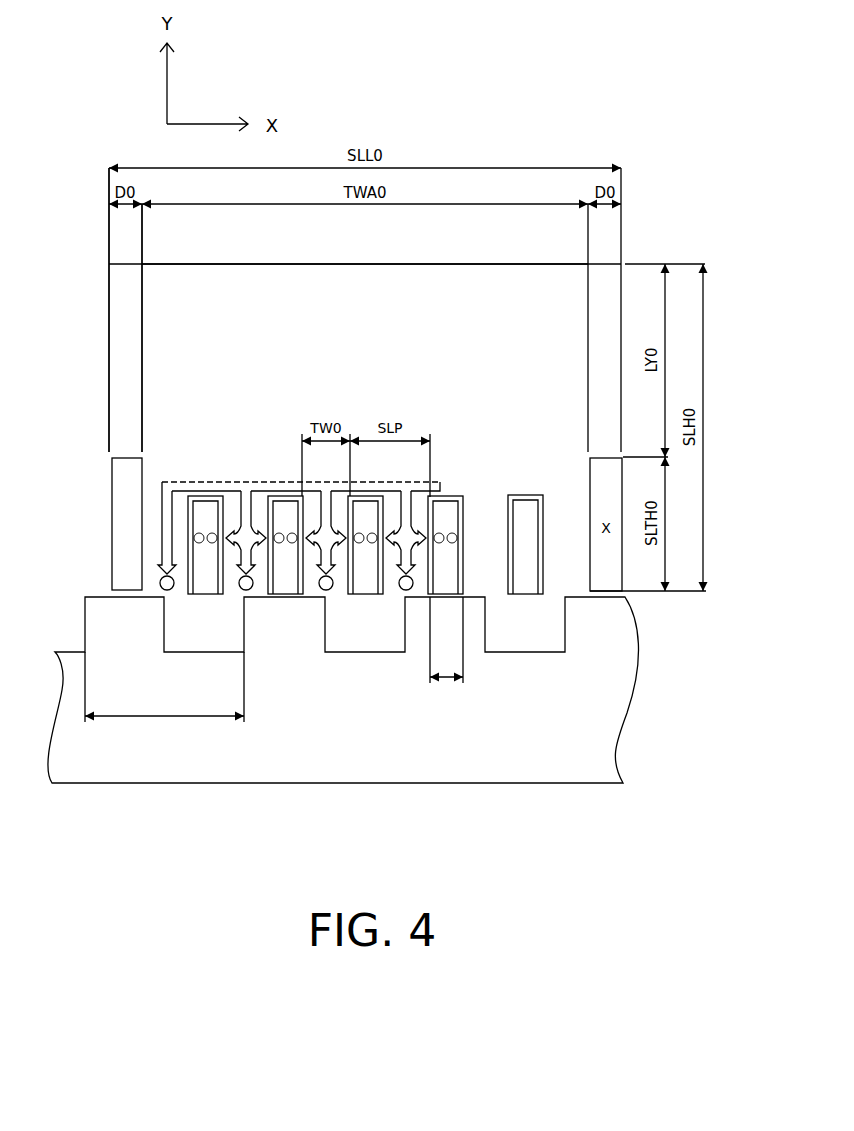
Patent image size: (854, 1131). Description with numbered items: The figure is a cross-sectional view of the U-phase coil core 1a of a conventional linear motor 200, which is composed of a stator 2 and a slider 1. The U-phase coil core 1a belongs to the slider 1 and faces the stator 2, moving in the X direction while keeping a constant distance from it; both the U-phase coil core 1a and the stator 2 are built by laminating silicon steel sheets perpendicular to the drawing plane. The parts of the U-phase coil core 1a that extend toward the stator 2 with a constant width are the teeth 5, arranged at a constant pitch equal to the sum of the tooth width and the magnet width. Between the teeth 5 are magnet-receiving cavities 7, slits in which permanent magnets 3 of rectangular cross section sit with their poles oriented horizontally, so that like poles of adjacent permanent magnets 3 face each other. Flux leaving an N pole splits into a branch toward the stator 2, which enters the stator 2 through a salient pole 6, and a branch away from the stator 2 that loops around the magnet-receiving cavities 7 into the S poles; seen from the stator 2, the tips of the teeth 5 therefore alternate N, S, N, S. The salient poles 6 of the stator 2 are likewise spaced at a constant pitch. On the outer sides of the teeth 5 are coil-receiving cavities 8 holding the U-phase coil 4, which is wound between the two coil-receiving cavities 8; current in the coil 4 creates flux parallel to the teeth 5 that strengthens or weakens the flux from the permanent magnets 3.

The slider 1 is at (645, 238).
The U-phase coil core 1a is at (220, 308).
The stator 2 is at (445, 712).
The permanent magnet 3 is at (438, 517).
The U-phase coil 4 is at (120, 570).
The teeth 5 is at (476, 538).
The salient pole 6 is at (285, 628).
The magnet-receiving cavity 7 is at (515, 495).
The coil-receiving cavity 8 is at (112, 455).
The linear motor 200 is at (693, 239).